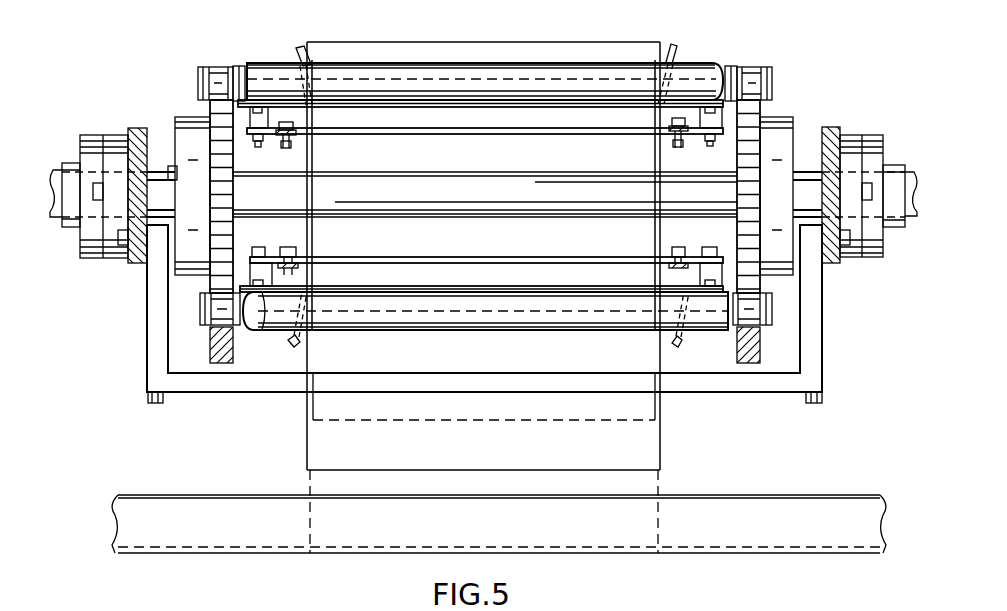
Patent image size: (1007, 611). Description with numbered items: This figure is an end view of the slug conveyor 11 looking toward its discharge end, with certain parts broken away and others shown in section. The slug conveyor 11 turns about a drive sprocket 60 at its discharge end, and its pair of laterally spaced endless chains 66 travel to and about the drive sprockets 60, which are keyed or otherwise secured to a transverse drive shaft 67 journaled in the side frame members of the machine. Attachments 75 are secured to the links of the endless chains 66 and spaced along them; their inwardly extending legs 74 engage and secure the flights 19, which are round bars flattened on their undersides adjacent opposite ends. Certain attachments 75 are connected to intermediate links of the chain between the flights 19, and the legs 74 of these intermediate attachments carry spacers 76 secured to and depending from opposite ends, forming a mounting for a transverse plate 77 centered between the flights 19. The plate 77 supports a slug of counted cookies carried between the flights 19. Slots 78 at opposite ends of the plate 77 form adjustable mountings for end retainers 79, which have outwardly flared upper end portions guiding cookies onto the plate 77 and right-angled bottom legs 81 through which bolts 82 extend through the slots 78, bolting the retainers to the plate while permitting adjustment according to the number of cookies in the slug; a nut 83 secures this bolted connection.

The slug conveyor 11 is at (777, 63).
The flights 19 is at (282, 65).
The drive sprocket 60 is at (793, 118).
The endless chains 66 is at (198, 78).
The transverse drive shaft 67 is at (515, 190).
The inwardly extending legs 74 is at (262, 98).
The attachments 75 is at (240, 65).
The spacers 76 is at (250, 118).
The transverse plate 77 is at (405, 135).
The slots 78 is at (305, 130).
The end retainers 79 is at (293, 47).
The right-angled bottom legs 81 is at (250, 138).
The bolts 82 is at (291, 148).
The nut 83 is at (296, 246).